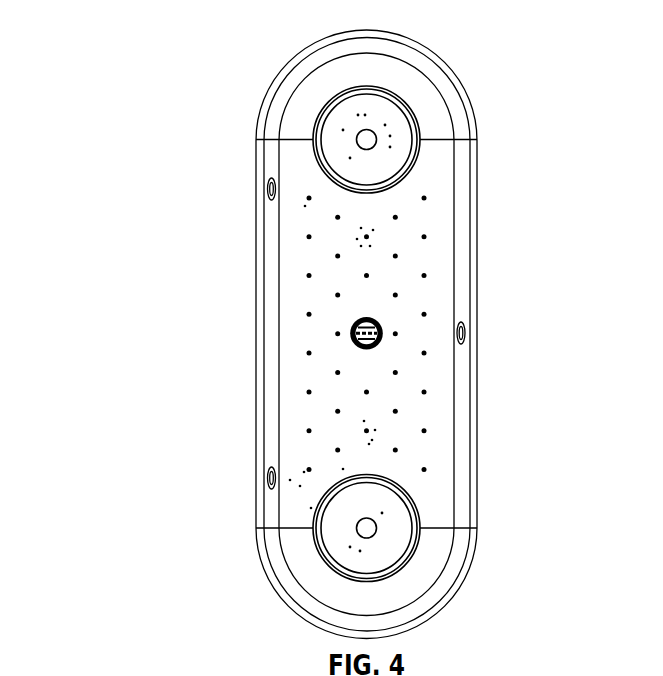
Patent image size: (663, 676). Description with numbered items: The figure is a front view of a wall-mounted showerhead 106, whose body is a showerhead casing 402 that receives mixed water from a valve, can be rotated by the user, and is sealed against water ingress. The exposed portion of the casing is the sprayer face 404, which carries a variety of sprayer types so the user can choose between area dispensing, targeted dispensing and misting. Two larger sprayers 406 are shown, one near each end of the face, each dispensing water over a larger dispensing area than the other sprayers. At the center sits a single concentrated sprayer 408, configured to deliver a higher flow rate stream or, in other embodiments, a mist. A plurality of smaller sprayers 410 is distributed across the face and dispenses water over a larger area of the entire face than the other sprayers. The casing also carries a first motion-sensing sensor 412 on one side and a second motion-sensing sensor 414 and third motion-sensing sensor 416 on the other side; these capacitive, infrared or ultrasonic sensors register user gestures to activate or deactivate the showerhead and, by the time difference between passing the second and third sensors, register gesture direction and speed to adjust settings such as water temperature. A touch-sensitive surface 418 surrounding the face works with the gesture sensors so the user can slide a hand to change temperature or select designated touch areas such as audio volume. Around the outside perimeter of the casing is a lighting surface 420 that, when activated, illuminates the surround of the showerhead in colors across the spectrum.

The wall-mounted showerhead 106 is at (129, 43).
The showerhead casing 402 is at (272, 76).
The sprayer face 404 is at (438, 117).
The larger sprayer 406 is at (313, 128).
The concentrated sprayer 408 is at (350, 333).
The plurality of smaller sprayers 410 is at (337, 216).
The first motion-sensing sensor 412 is at (466, 333).
The second motion-sensing sensor 414 is at (267, 190).
The third motion-sensing sensor 416 is at (269, 478).
The touch-sensitive surface 418 is at (272, 267).
The lighting surface 420 is at (262, 408).